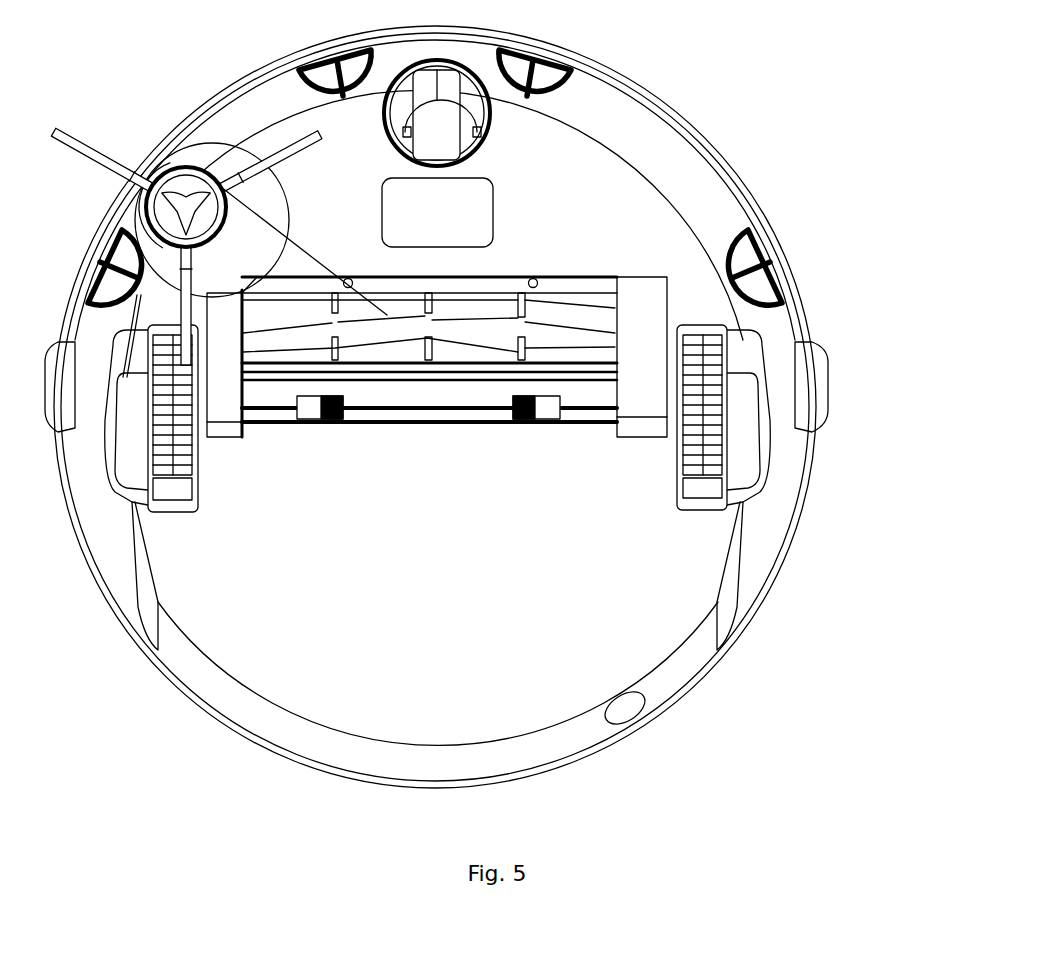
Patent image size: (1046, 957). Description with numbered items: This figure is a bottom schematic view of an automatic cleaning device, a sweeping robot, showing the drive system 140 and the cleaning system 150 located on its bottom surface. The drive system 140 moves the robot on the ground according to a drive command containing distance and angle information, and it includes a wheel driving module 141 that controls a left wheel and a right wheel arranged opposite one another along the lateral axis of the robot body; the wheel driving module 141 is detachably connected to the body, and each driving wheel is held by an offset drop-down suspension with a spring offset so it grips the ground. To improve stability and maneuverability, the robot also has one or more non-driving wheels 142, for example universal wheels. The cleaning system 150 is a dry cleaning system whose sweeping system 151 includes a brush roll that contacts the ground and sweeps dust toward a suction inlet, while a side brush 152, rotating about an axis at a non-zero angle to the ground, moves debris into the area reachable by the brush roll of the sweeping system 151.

The drive system 140 is at (553, 286).
The wheel driving module 141 is at (720, 333).
The non-driving wheel 142 is at (492, 122).
The cleaning system 150 is at (219, 216).
The sweeping system 151 is at (180, 168).
The side brush 152 is at (150, 163).